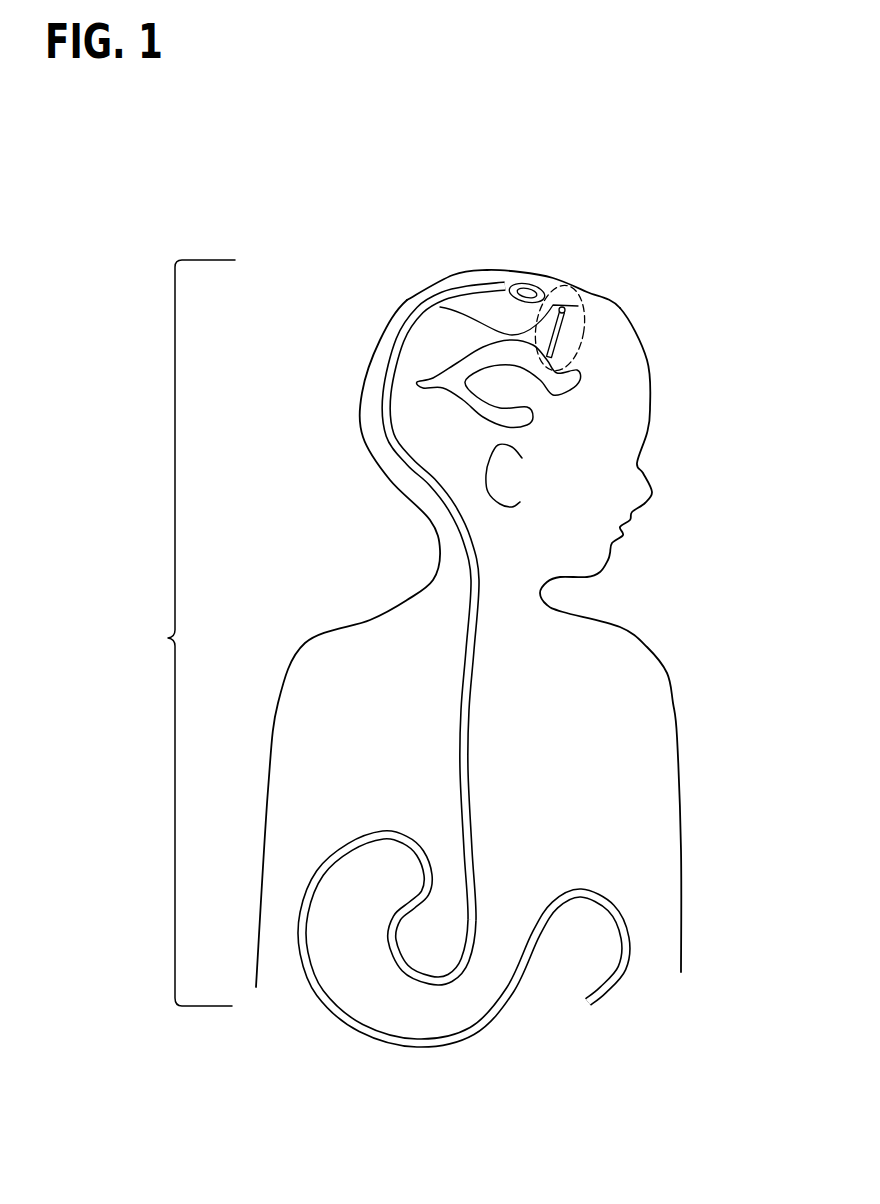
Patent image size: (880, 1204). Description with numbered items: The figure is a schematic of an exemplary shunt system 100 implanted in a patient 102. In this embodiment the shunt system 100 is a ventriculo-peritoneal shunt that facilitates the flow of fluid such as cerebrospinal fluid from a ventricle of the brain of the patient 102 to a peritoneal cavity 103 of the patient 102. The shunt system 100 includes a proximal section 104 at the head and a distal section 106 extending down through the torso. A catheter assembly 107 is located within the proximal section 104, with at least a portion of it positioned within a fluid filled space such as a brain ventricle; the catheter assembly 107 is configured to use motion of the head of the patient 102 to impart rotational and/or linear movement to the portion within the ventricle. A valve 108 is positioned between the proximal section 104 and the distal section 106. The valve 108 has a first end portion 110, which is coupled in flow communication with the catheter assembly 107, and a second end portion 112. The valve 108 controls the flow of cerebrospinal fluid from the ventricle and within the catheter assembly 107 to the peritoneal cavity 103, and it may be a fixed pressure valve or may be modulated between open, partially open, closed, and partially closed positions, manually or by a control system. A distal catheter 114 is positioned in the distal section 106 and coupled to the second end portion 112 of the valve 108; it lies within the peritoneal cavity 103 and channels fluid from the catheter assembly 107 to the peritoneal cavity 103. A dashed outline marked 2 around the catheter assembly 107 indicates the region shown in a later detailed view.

The shunt system 100 is at (258, 193).
The patient 102 is at (517, 607).
The peritoneal cavity 103 is at (297, 890).
The proximal section 104 is at (635, 294).
The distal section 106 is at (168, 638).
The catheter assembly 107 is at (567, 333).
The valve 108 is at (521, 276).
The first end portion 110 is at (440, 307).
The second end portion 112 is at (497, 282).
The distal catheter 114 is at (409, 664).
The cross-section region of FIG. 2 is at (583, 320).